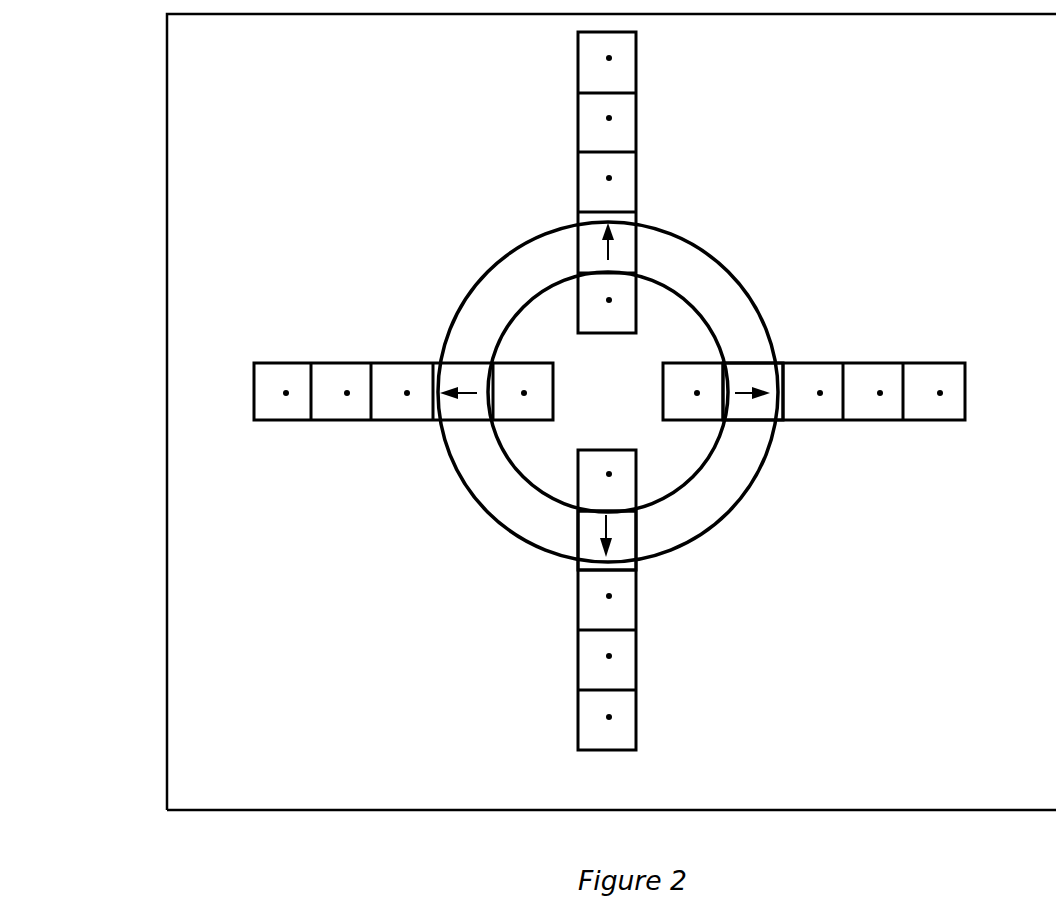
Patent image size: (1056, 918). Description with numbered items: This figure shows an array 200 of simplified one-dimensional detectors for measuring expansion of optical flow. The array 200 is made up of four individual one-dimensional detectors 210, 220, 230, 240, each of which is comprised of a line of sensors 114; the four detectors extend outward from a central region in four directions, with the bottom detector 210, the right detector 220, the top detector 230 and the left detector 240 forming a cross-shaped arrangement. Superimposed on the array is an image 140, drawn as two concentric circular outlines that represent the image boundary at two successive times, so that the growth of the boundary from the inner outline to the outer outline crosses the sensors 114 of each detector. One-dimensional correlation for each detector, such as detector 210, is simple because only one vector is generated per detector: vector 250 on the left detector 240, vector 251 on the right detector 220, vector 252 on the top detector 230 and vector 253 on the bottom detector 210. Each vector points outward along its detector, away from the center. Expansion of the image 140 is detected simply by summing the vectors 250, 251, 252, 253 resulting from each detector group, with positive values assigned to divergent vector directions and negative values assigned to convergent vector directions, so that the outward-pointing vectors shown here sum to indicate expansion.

The array 200 is at (993, 810).
The one-dimensional detector 210 is at (613, 752).
The one-dimensional detector 220 is at (912, 426).
The one-dimensional detector 230 is at (637, 72).
The one-dimensional detector 240 is at (288, 422).
The sensor 114 is at (757, 360).
The image 140 is at (663, 280).
The vector 250 is at (462, 398).
The vector 251 is at (745, 397).
The vector 252 is at (607, 250).
The vector 253 is at (606, 530).